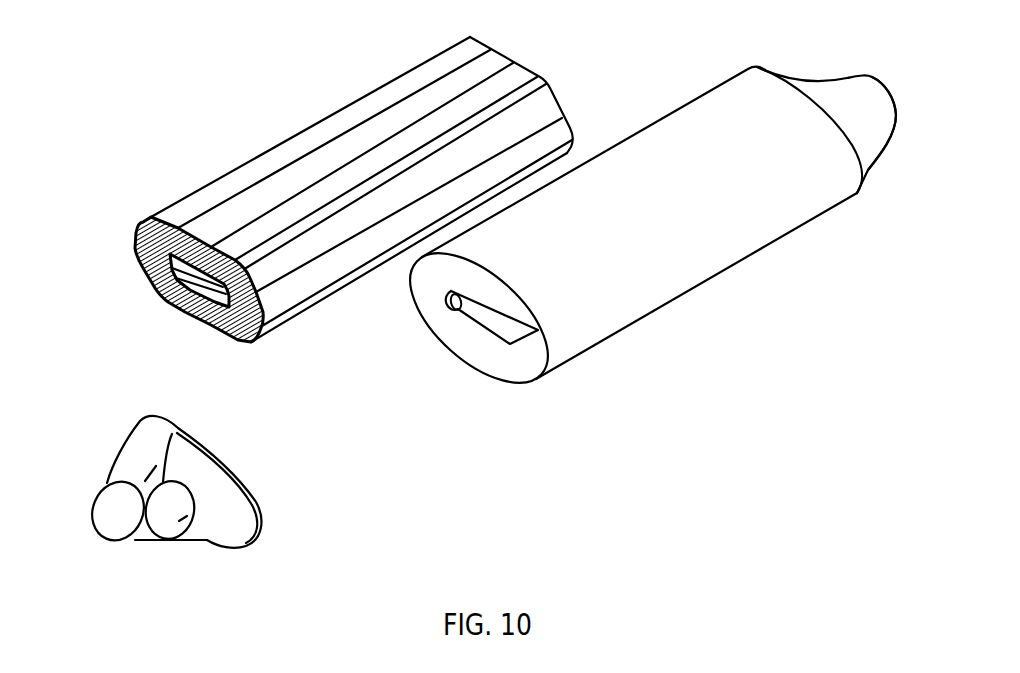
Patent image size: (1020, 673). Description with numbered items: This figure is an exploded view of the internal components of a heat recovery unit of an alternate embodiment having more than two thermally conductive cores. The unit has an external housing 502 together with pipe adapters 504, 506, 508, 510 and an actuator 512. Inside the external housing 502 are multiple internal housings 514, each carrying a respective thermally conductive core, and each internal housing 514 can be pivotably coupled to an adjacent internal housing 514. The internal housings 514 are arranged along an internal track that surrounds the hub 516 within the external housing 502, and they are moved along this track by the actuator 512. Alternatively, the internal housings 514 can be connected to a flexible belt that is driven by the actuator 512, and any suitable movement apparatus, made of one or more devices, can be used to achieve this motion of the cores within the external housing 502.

The external housing 502 is at (645, 153).
The pipe adapter 504 is at (127, 460).
The pipe adapter 506 is at (215, 527).
The pipe adapter 508 is at (828, 82).
The pipe adapter 510 is at (880, 107).
The actuator 512 is at (458, 318).
The internal housing 514 is at (242, 178).
The hub 516 is at (492, 300).